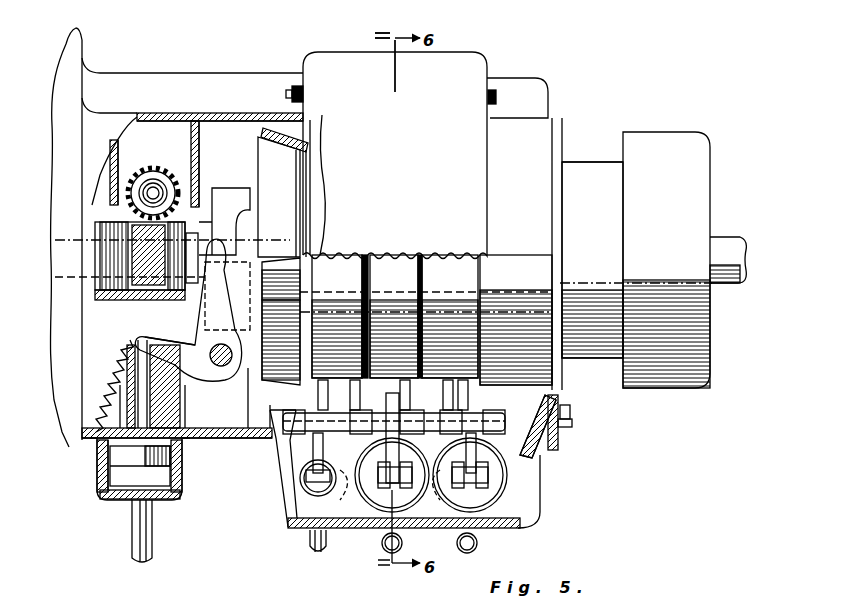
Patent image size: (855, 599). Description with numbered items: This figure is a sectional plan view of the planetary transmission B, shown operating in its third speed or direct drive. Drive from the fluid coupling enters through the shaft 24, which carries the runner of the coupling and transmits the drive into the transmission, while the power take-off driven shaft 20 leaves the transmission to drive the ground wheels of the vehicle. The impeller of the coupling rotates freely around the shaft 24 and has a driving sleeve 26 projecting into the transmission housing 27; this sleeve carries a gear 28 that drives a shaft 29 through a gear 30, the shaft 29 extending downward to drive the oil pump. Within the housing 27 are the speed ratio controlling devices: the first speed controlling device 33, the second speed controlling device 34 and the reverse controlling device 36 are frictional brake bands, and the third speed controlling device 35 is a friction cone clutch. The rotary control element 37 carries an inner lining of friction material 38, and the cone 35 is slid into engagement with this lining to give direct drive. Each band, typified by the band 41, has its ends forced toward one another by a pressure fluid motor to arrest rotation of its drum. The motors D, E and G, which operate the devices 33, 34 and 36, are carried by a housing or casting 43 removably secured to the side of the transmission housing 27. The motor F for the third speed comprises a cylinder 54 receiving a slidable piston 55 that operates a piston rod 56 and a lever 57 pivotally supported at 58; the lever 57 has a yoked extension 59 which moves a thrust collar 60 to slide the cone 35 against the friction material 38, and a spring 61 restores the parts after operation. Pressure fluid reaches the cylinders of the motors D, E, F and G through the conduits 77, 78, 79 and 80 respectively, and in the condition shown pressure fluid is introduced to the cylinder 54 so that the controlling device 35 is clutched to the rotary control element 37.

The power take-off driven shaft 20 is at (722, 250).
The shaft 24 is at (95, 241).
The driving sleeve 26 is at (92, 196).
The transmission housing 27 is at (215, 115).
The gear 28 is at (150, 292).
The shaft 29 is at (154, 189).
The gear 30 is at (148, 178).
The first speed controlling device 33 is at (390, 283).
The second speed controlling device 34 is at (338, 290).
The third speed controlling device 35 is at (272, 165).
The reverse controlling device 36 is at (448, 283).
The rotary control element 37 is at (322, 130).
The friction material 38 is at (296, 152).
The band 41 is at (400, 318).
The housing or casting 43 is at (522, 492).
The cylinder 54 is at (176, 472).
The piston 55 is at (110, 460).
The piston rod 56 is at (143, 403).
The lever 57 is at (162, 340).
The pivot support 58 is at (258, 345).
The yoked extension 59 is at (260, 290).
The thrust collar 60 is at (236, 190).
The spring 61 is at (100, 368).
The conduit 77 is at (381, 548).
The conduit 78 is at (315, 548).
The conduit 79 is at (138, 528).
The conduit 80 is at (457, 545).
The transmission B is at (470, 72).
The pressure fluid motor D is at (385, 500).
The pressure fluid motor E is at (284, 488).
The pressure fluid motor F is at (110, 482).
The pressure fluid motor G is at (490, 478).